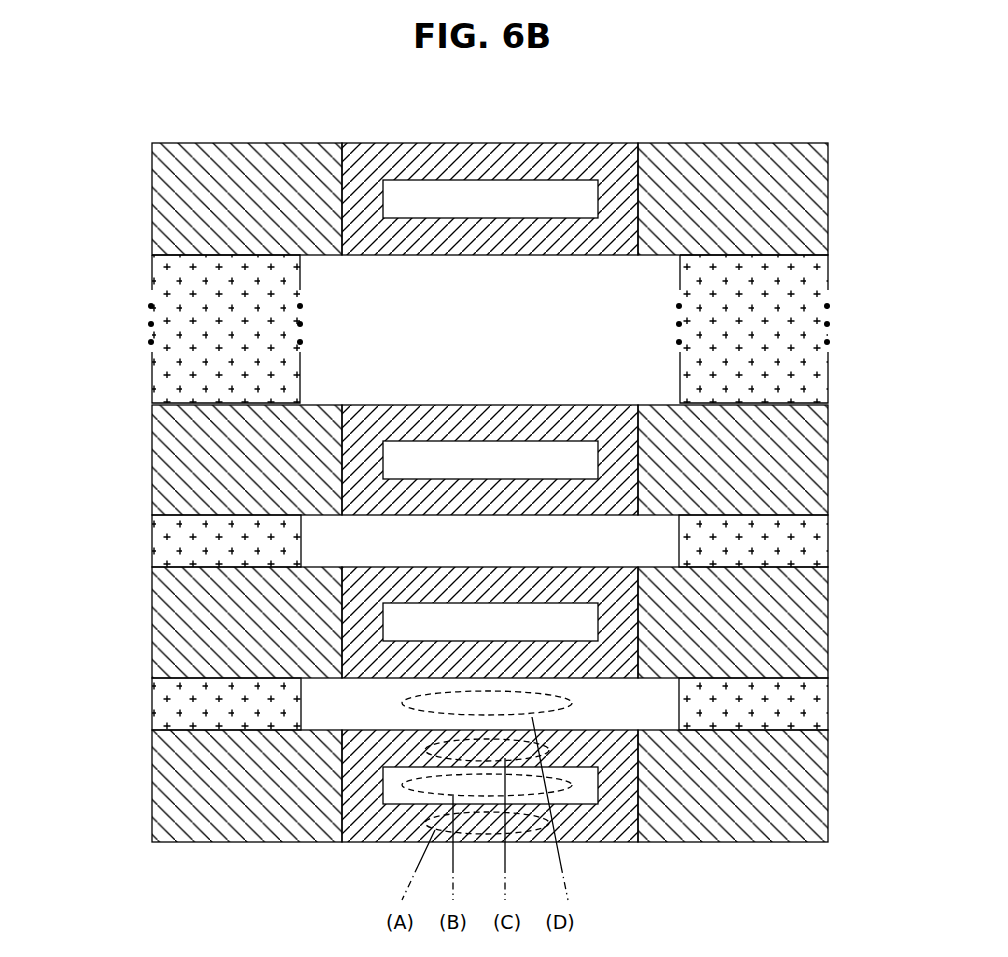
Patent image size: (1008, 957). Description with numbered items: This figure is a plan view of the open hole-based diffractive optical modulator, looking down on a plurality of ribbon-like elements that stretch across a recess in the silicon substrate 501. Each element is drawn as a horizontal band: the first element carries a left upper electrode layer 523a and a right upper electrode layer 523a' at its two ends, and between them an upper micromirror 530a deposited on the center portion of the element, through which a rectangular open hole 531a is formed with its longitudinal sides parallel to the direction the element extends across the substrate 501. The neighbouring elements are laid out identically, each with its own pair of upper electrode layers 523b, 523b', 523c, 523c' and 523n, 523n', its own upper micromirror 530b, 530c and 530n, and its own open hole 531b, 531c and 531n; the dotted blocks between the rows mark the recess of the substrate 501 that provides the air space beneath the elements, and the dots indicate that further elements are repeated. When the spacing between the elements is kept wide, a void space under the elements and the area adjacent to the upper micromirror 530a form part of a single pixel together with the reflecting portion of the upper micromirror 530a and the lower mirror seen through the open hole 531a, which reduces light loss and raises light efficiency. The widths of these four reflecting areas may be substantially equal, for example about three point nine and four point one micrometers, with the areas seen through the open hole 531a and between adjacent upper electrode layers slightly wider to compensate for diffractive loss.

The insulating layer n 523n is at (192, 199).
The conductive layer n 530n is at (623, 197).
The opening n 531n is at (588, 189).
The insulating layer n' 523n' is at (776, 199).
The insulating layer c 523c is at (192, 460).
The conductive layer c 530c is at (627, 458).
The opening c 531c is at (590, 446).
The insulating layer c' 523c' is at (775, 460).
The insulating layer b 523b is at (192, 622).
The conductive layer b 530b is at (627, 620).
The opening b 531b is at (590, 608).
The insulating layer b' 523b' is at (776, 622).
The silicon substrate 501 is at (805, 705).
The upper electrode layer 523a is at (192, 786).
The upper micromirror 530a is at (627, 783).
The open hole 531a is at (590, 775).
The upper electrode layer 523a' is at (775, 786).